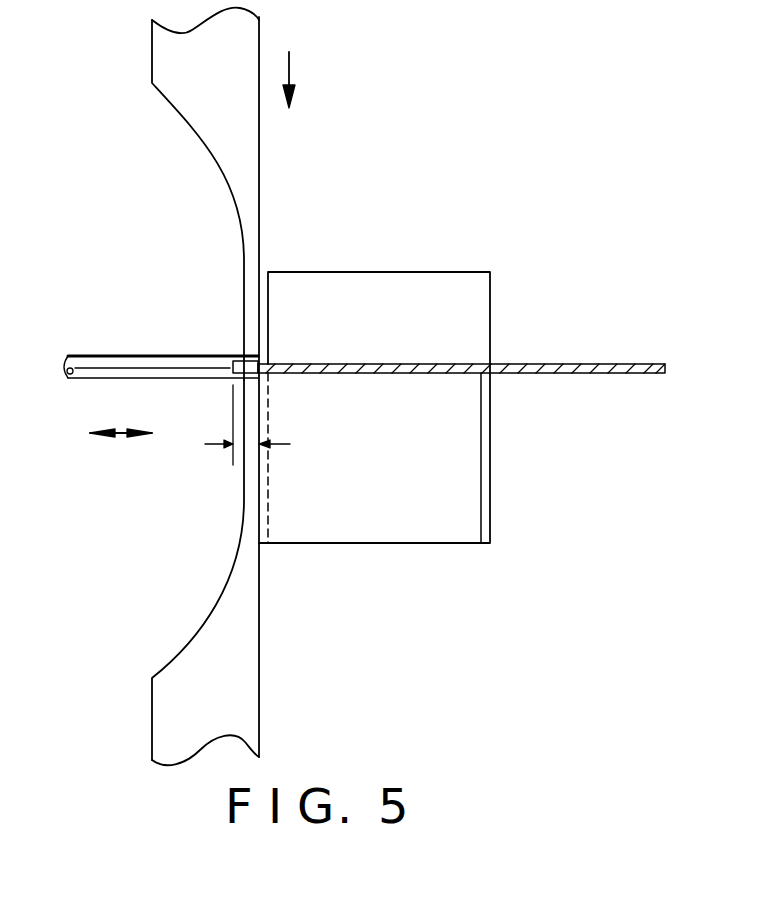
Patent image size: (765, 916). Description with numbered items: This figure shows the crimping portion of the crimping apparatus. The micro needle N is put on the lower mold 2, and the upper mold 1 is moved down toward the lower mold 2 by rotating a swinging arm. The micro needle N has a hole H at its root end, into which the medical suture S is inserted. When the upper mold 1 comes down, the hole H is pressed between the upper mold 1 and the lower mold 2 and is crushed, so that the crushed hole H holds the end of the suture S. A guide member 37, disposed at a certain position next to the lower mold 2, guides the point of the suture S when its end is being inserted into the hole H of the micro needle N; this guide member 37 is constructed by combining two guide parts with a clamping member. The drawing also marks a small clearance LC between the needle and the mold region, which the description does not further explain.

The upper mold 1 is at (192, 100).
The lower mold 2 is at (158, 722).
The micro needle N is at (100, 360).
The hole H is at (241, 357).
The medical suture S is at (616, 365).
The guide member 37 is at (491, 493).
The clearance LC is at (243, 440).